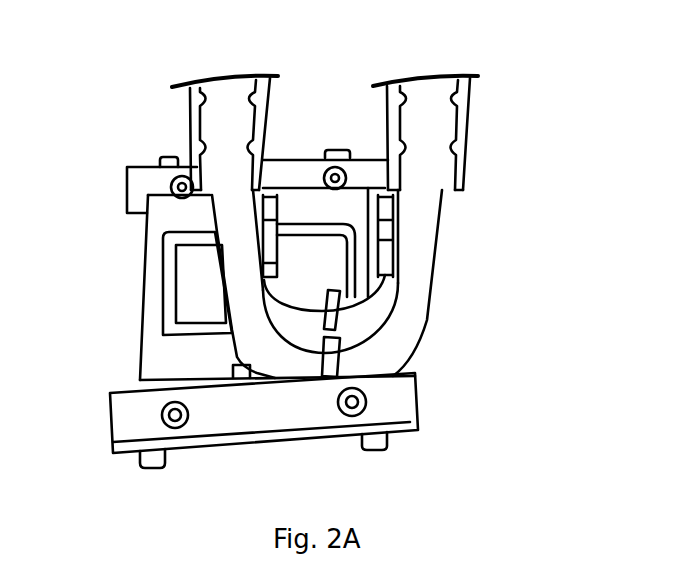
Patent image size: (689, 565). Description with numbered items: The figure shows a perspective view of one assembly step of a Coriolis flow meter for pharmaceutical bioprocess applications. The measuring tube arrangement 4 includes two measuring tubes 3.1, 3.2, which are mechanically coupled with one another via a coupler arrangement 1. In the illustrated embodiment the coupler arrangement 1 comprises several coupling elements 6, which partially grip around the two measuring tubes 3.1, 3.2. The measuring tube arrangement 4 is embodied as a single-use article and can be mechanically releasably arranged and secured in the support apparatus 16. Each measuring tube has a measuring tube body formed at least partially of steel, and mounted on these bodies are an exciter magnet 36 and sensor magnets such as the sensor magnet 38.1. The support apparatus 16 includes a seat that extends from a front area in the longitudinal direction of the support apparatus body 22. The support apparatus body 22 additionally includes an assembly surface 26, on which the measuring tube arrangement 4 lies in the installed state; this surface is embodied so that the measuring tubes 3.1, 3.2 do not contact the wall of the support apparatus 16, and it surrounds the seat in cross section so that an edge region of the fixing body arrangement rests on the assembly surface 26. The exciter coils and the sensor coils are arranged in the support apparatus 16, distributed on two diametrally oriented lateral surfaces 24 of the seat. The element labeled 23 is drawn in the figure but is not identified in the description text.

The coupler arrangement 1 is at (373, 133).
The coupling element 6 is at (460, 176).
The measuring tube arrangement 4 is at (457, 319).
The support apparatus 16 is at (147, 317).
The support apparatus body 22 is at (202, 363).
The window opening 23 is at (185, 267).
The assembly surface 26 is at (167, 323).
The lateral surface of the seat 24 is at (320, 267).
The sensor magnet 38.1 is at (265, 263).
The measuring tube 3.2 is at (385, 302).
The measuring tube 3.1 is at (283, 363).
The exciter magnet 36 is at (345, 365).